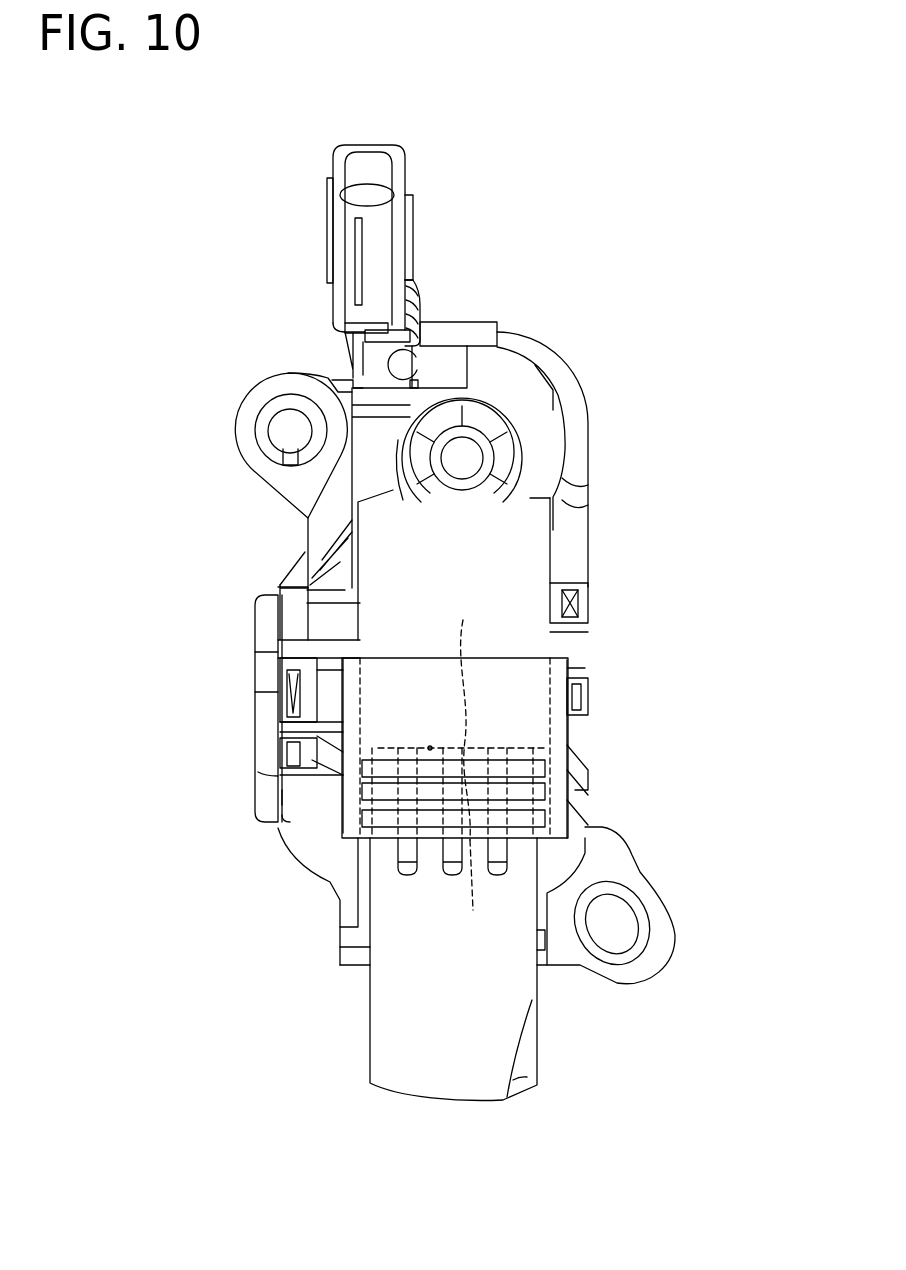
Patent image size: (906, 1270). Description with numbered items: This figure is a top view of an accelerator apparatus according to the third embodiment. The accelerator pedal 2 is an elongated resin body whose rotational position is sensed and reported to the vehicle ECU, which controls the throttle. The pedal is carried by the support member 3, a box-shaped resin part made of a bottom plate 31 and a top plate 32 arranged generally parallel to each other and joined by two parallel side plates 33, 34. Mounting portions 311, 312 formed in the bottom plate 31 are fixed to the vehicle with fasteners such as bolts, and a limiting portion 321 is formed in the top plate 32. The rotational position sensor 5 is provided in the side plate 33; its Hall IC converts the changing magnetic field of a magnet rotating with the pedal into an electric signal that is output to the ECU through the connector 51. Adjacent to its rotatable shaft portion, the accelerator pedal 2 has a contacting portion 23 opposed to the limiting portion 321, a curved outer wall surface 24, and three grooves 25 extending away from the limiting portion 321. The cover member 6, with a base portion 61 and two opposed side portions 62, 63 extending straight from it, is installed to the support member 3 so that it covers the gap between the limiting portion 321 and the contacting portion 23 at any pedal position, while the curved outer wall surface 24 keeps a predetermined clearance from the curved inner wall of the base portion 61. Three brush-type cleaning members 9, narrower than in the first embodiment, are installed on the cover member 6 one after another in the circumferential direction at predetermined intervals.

The accelerator pedal 2 is at (383, 1050).
The support member 3 is at (555, 552).
The rotational position sensor 5 is at (280, 678).
The cover member 6 is at (517, 715).
The cleaning member 9 is at (575, 770).
The contacting portion 23 is at (461, 717).
The curved outer wall surface 24 is at (433, 805).
The grooves 25 is at (407, 848).
The bottom plate 31 is at (343, 362).
The top plate 32 is at (412, 560).
The side plate 33 is at (300, 612).
The side plate 34 is at (552, 643).
The connector 51 is at (342, 247).
The base portion 61 is at (393, 732).
The side portion 62 is at (342, 787).
The side portion 63 is at (578, 750).
The mounting portion 311 is at (250, 422).
The mounting portion 312 is at (672, 942).
The limiting portion 321 is at (472, 892).